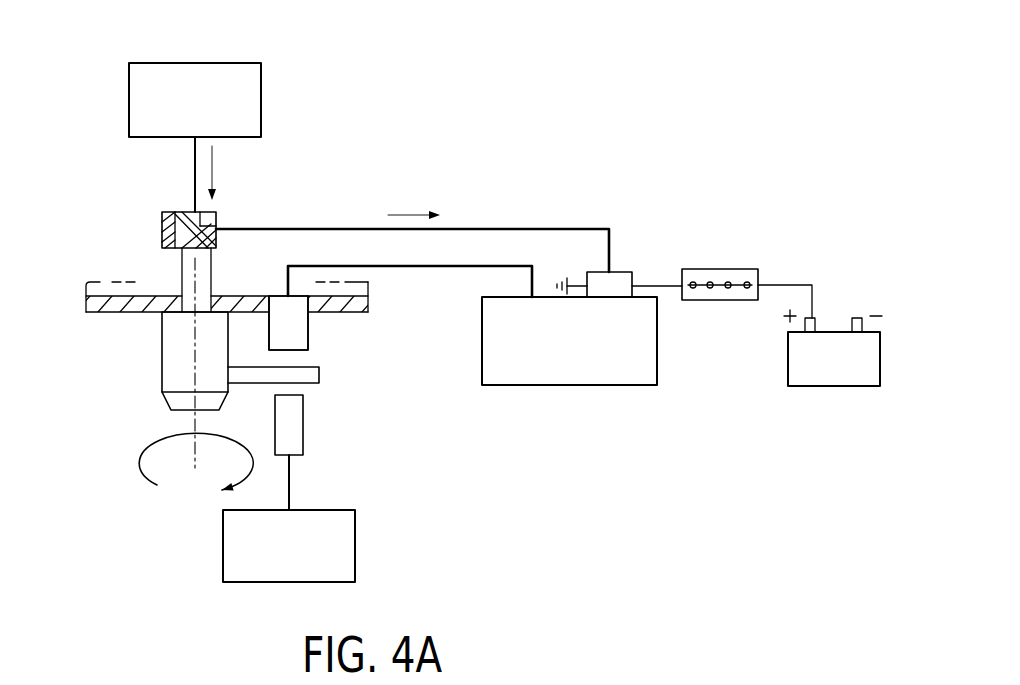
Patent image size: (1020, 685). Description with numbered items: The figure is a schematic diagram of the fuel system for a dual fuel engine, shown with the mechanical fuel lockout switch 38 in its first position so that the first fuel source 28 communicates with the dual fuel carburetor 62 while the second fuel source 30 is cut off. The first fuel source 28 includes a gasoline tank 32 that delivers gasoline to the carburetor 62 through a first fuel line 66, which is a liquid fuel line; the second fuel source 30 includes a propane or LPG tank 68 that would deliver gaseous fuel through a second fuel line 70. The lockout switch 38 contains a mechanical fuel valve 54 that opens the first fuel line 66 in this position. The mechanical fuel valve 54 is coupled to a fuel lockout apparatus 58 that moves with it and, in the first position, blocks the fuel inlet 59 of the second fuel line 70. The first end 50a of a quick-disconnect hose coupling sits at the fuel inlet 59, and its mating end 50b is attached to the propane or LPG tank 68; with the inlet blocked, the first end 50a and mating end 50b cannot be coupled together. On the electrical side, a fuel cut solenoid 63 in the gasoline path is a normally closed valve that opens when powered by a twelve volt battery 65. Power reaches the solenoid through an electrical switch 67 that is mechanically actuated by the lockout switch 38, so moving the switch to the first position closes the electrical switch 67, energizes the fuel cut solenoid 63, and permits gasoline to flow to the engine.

The first fuel source 28 is at (162, 109).
The gasoline tank 32 is at (129, 98).
The first fuel line 66 is at (493, 229).
The fuel cut solenoid 63 is at (612, 272).
The electrical switch 67 is at (722, 269).
The battery 65 is at (850, 372).
The dual fuel carburetor 62 is at (658, 342).
The second fuel line 70 is at (411, 268).
The fuel inlet 59 is at (324, 326).
The first end of the quick-disconnect hose coupling 50a is at (297, 322).
The mechanical fuel valve 54 is at (162, 348).
The mechanical fuel lockout switch 38 is at (152, 403).
The fuel lockout apparatus 58 is at (244, 373).
The mating end of the quick-disconnect hose coupling 50b is at (290, 416).
The second fuel source 30 is at (344, 531).
The propane or LPG tank 68 is at (355, 548).